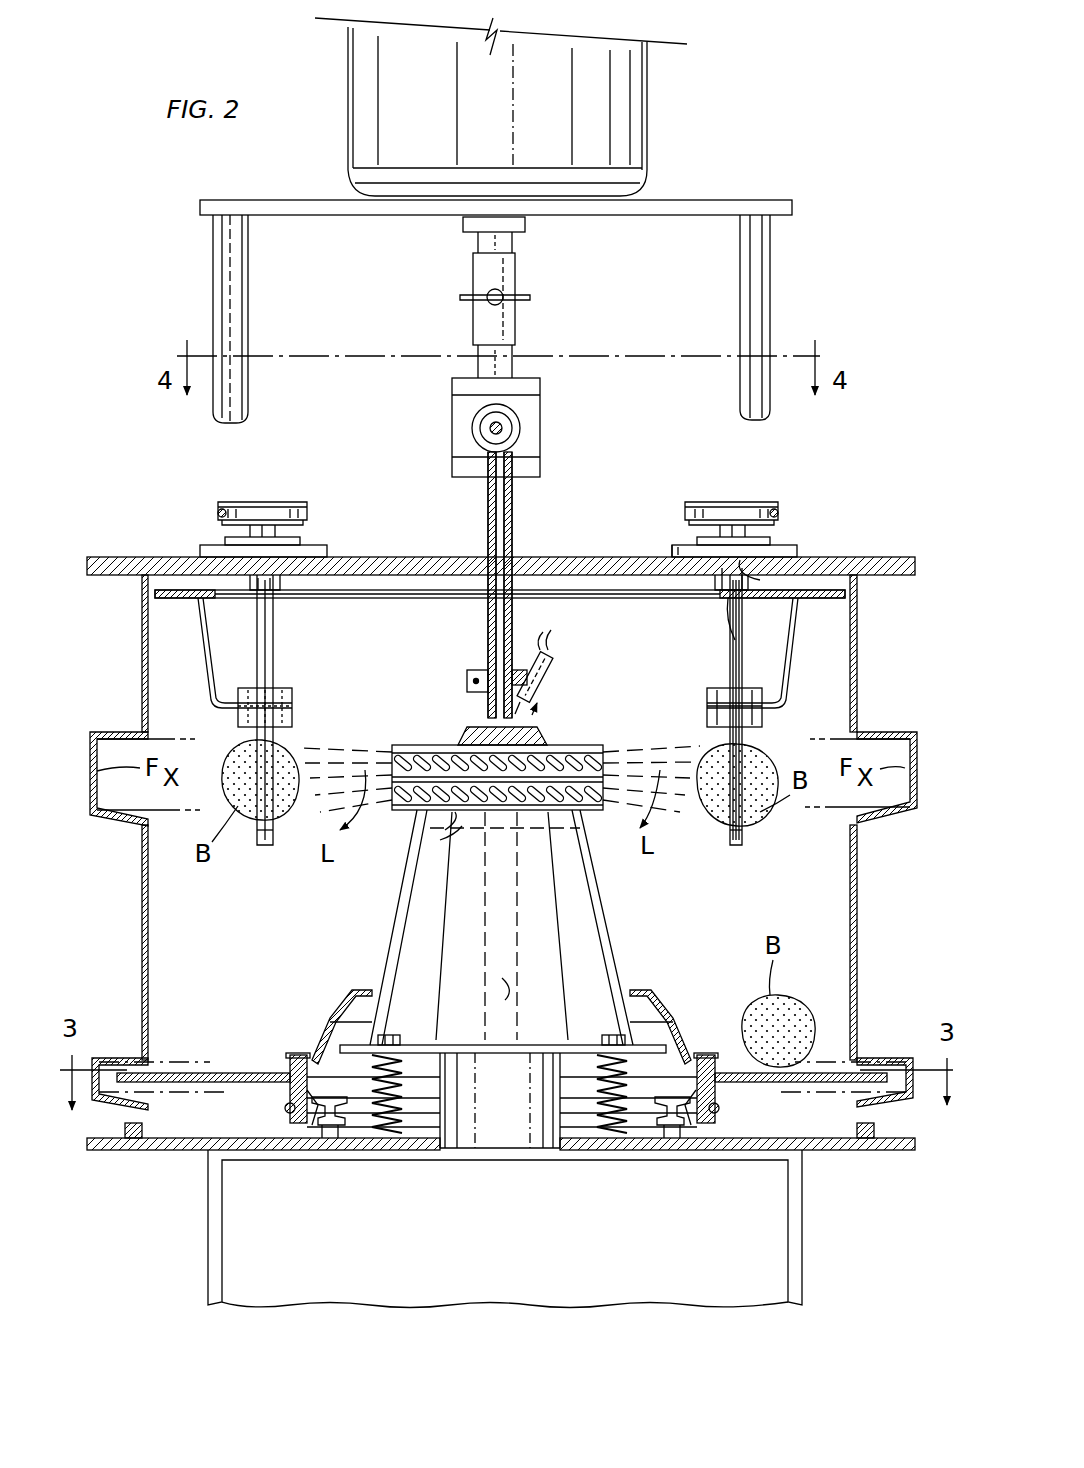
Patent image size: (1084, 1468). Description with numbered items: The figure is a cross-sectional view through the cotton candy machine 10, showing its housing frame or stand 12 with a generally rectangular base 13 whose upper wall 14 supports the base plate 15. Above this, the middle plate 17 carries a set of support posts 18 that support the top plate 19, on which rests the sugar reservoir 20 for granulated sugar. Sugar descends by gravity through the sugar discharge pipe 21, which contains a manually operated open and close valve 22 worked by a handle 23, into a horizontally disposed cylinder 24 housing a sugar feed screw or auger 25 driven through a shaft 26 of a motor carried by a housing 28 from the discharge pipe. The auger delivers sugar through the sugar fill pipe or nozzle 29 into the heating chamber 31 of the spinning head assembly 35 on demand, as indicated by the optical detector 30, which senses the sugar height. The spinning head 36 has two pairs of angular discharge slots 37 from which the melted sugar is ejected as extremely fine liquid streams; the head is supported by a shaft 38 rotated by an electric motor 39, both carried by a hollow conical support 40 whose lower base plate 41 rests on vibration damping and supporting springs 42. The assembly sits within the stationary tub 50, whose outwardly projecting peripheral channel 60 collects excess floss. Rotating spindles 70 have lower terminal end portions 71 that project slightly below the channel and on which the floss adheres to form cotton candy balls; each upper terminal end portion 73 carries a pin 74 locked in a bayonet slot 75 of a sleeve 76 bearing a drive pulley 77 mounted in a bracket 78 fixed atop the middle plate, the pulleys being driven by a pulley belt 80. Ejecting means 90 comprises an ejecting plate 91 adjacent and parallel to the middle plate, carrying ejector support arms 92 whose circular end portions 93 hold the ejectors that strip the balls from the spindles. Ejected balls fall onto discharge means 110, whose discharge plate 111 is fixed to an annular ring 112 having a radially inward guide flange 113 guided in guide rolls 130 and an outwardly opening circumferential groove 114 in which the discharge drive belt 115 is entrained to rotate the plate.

The machine 10 is at (700, 88).
The housing frame or stand 12 is at (203, 1235).
The base 13 is at (805, 1260).
The upper wall 14 is at (667, 1152).
The base plate 15 is at (843, 1150).
The middle plate 17 is at (112, 557).
The support posts 18 is at (248, 325).
The top plate 19 is at (308, 208).
The sugar reservoir 20 is at (408, 99).
The sugar discharge pipe 21 is at (478, 240).
The open and close valve 22 is at (480, 268).
The handle 23 is at (530, 297).
The cylinder 24 is at (474, 425).
The sugar feed screw or auger 25 is at (510, 432).
The shaft 26 is at (490, 432).
The housing 28 is at (540, 465).
The sugar fill pipe or nozzle 29 is at (512, 538).
The optical detector 30 is at (558, 662).
The heating chamber 31 is at (453, 835).
The spinning head assembly 35 is at (590, 730).
The spinning head 36 is at (392, 812).
The angular discharge slots 37 is at (410, 760).
The shaft 38 is at (510, 992).
The electric motor 39 is at (488, 1104).
The hollow conical support 40 is at (446, 961).
The lower base plate 41 is at (530, 1050).
The vibration damping and supporting springs 42 is at (410, 1125).
The stationary tub 50 is at (142, 930).
The peripheral channel 60 is at (95, 800).
The spindles 70 is at (275, 660).
The lower terminal end portions 71 is at (265, 848).
The upper terminal end portion 73 is at (730, 636).
The pin 74 is at (748, 580).
The bayonet slot 75 is at (738, 615).
The sleeve 76 is at (645, 578).
The drive pulley 77 is at (268, 502).
The bracket 78 is at (675, 545).
The pulley belt 80 is at (218, 510).
The ejecting means 90 is at (175, 605).
The ejecting plate 91 is at (690, 598).
The ejector support arms 92 is at (210, 640).
The circular end portion 93 is at (280, 712).
The discharge means 110 is at (215, 1050).
The discharge plate 111 is at (250, 1072).
The annular ring 112 is at (312, 1062).
The guide flange 113 is at (705, 1122).
The circumferential groove 114 is at (305, 1112).
The discharge drive belt 115 is at (285, 1108).
The guide rolls 130 is at (330, 1130).